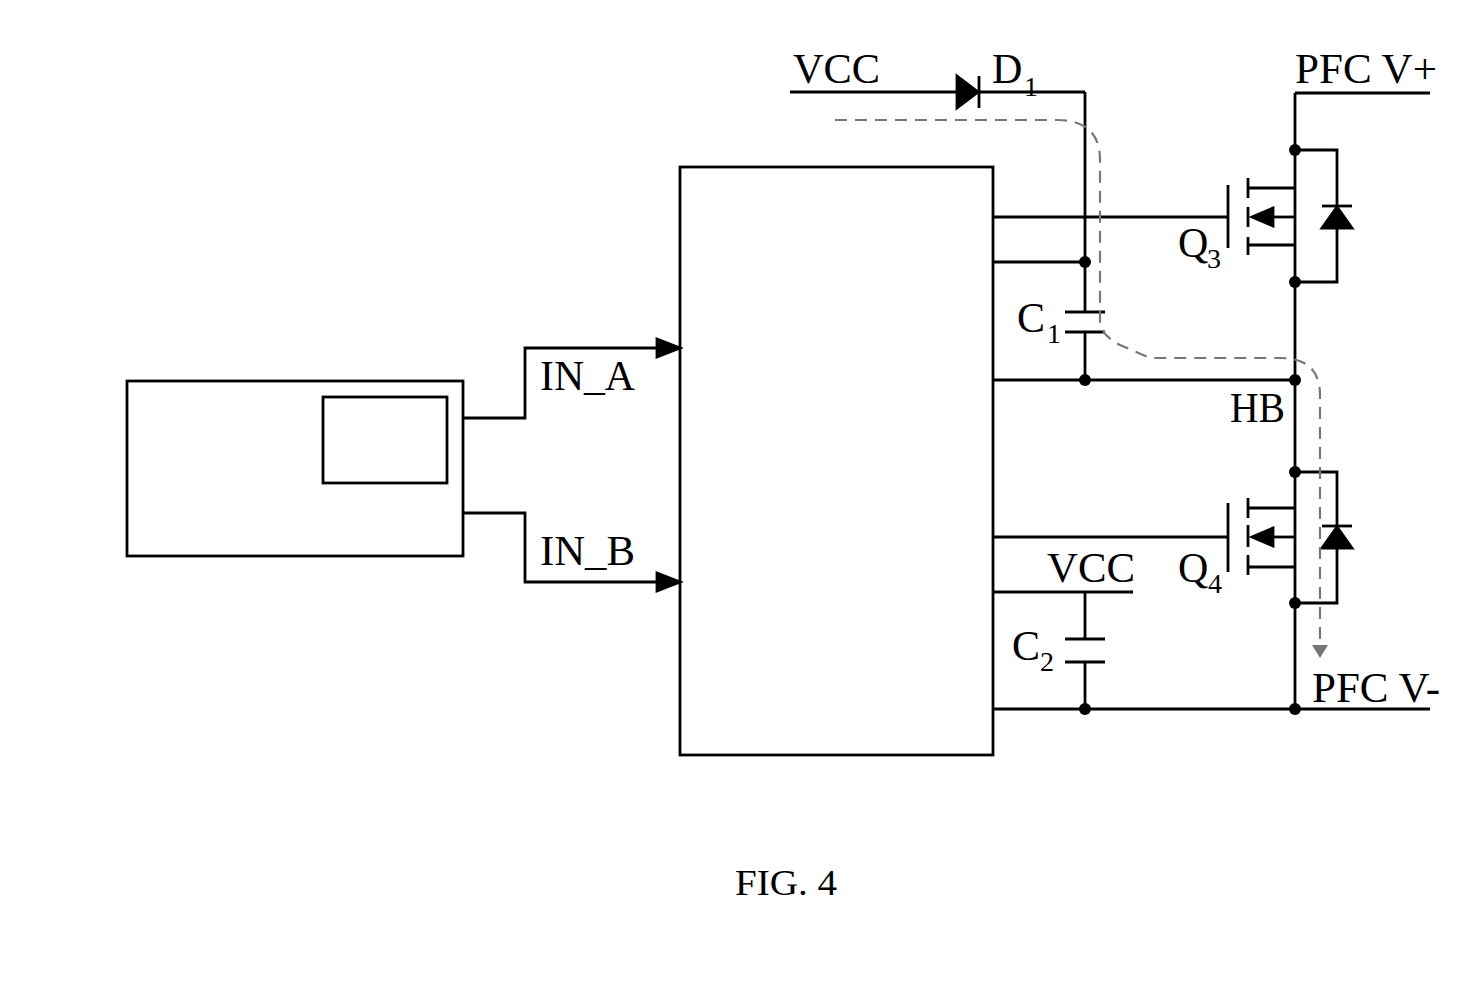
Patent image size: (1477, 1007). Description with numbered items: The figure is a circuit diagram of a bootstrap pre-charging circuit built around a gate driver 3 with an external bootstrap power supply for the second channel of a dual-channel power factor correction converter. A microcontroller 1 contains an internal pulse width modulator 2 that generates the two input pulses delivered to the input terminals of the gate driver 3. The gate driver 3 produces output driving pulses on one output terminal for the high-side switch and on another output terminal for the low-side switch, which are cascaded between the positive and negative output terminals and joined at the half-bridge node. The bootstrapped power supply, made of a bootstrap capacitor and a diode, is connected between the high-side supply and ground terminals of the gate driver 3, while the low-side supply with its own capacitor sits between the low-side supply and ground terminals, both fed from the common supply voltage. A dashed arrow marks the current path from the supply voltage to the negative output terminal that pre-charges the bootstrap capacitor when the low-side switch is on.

The microcontroller 1 is at (155, 381).
The pulse width modulator 2 is at (323, 465).
The gate driver 3 is at (680, 235).